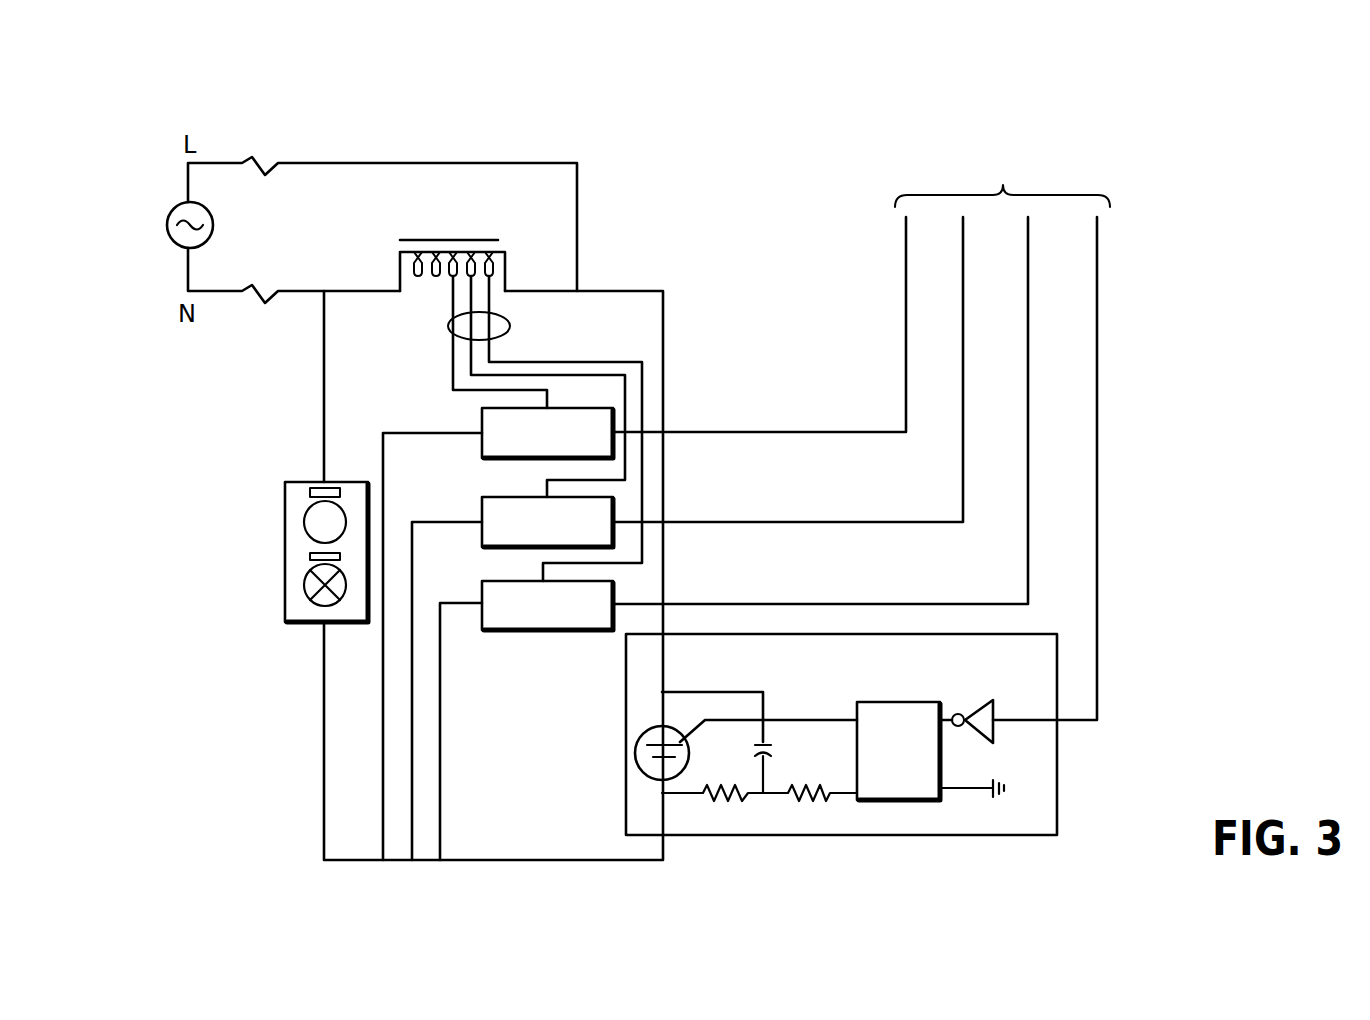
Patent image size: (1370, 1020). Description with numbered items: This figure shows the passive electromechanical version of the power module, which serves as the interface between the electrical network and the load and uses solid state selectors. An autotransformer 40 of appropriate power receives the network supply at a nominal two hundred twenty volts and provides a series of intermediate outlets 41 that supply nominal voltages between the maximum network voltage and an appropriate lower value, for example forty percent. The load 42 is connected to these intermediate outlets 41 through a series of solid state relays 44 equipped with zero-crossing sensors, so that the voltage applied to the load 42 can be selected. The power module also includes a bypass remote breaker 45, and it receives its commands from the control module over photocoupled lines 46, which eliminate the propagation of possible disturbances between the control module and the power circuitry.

The autotransformer 40 is at (493, 244).
The intermediate outlets 41 is at (545, 428).
The load 42 is at (285, 572).
The solid state relays 44 is at (613, 445).
The bypass remote breaker 45 is at (1057, 803).
The photocoupled lines 46 is at (886, 389).